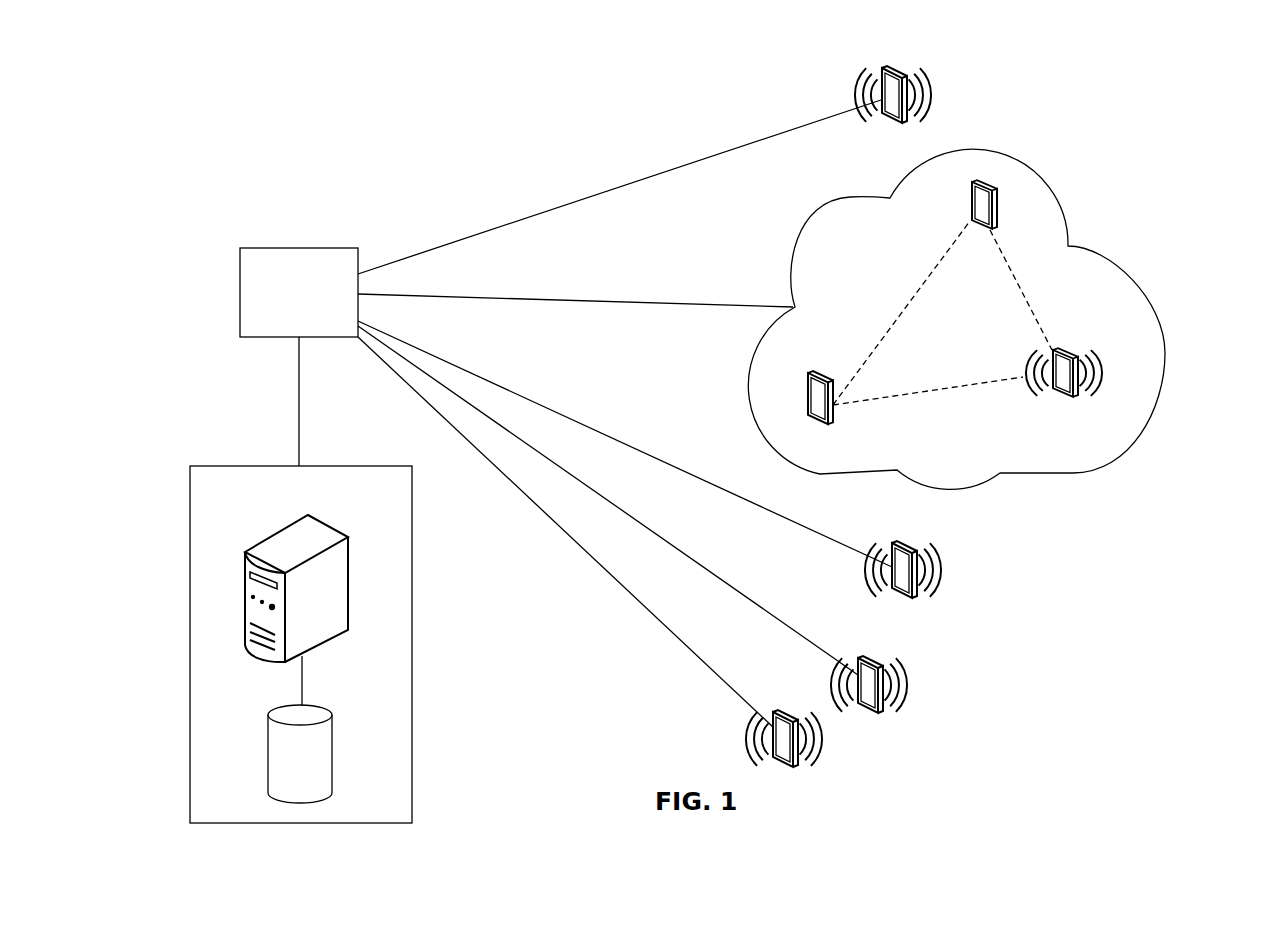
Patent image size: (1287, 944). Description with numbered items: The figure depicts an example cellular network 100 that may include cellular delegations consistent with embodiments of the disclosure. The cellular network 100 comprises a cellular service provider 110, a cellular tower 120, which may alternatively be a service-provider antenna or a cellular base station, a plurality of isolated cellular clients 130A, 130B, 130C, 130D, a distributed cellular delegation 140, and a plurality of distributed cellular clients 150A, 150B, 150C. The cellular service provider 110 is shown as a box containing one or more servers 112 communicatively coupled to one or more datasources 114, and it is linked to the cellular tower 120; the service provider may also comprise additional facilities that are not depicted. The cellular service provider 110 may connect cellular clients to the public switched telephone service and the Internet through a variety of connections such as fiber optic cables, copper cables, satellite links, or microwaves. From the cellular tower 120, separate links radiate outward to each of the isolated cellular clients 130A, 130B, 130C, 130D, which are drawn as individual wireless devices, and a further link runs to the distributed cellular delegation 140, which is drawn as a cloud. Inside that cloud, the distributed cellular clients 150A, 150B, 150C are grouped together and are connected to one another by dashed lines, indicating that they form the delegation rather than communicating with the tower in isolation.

The cellular network 100 is at (1143, 752).
The cellular service provider 110 is at (412, 643).
The server 112 is at (335, 575).
The datasource 114 is at (323, 753).
The cellular tower 120 is at (297, 248).
The isolated cellular client 130A is at (898, 68).
The isolated cellular client 130B is at (905, 543).
The isolated cellular client 130C is at (875, 658).
The isolated cellular client 130D is at (791, 712).
The distributed cellular delegation 140 is at (1087, 244).
The distributed cellular client 150A is at (991, 182).
The distributed cellular client 150B is at (826, 373).
The distributed cellular client 150C is at (1085, 322).